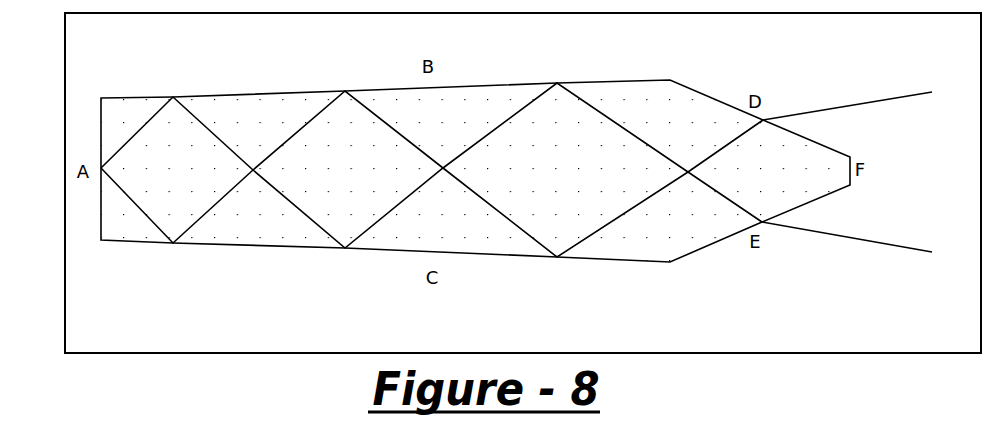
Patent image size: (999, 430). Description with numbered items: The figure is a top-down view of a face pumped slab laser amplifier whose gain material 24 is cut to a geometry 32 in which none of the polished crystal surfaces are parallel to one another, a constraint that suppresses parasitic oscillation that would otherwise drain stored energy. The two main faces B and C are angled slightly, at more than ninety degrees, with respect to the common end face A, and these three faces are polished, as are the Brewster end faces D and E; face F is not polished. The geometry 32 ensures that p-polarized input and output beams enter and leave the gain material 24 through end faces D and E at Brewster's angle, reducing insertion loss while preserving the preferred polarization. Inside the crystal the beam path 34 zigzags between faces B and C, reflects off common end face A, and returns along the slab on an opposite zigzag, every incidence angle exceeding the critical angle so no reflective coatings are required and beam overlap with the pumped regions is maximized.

The gain material 24 is at (237, 115).
The beam path 34 is at (619, 127).
The geometry 32 is at (701, 295).